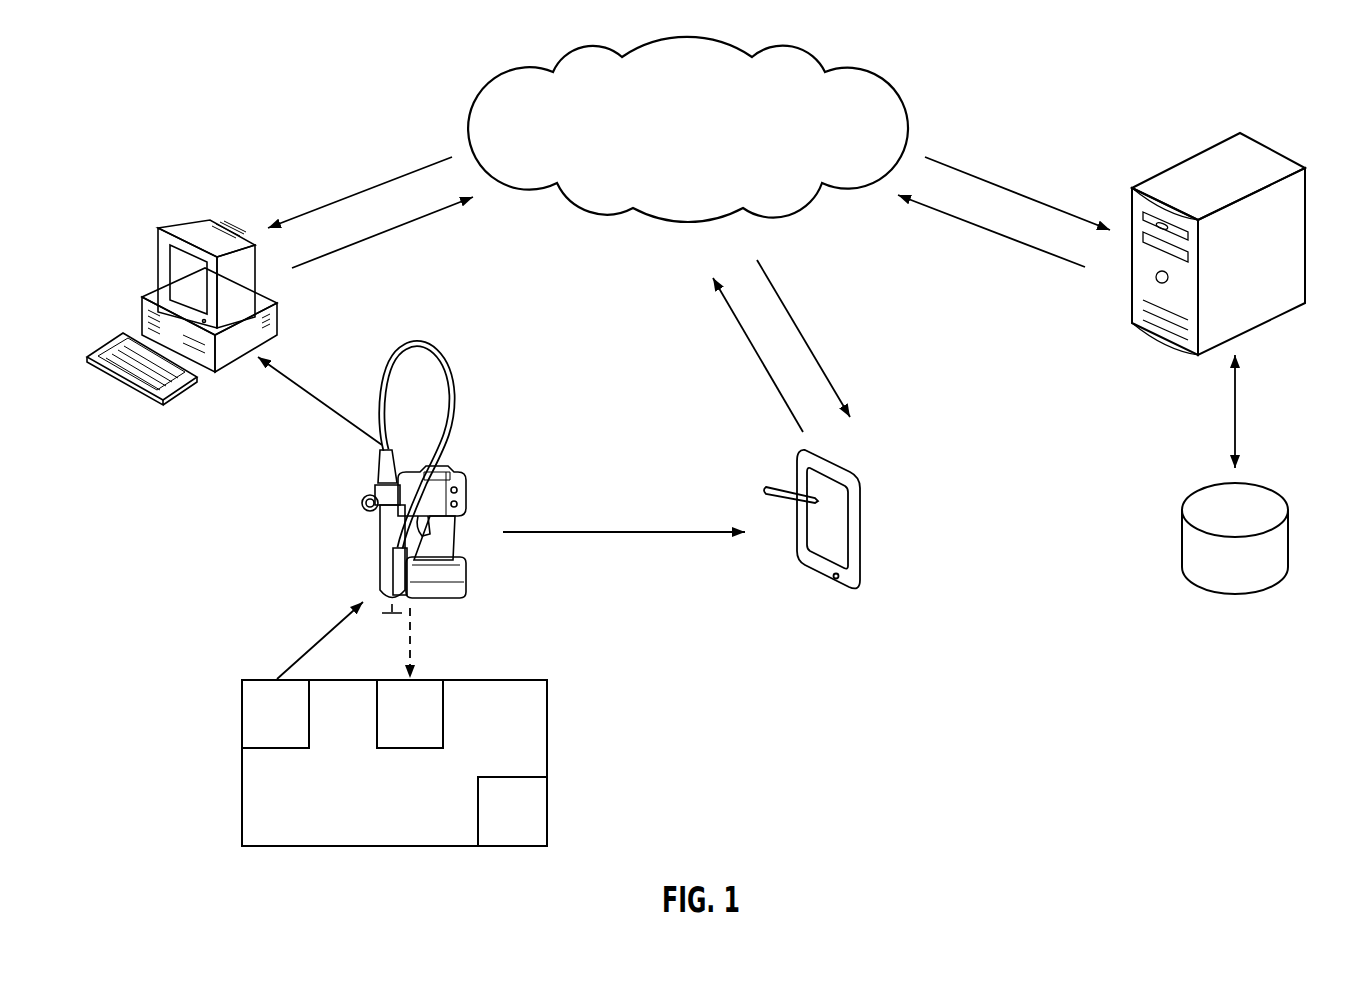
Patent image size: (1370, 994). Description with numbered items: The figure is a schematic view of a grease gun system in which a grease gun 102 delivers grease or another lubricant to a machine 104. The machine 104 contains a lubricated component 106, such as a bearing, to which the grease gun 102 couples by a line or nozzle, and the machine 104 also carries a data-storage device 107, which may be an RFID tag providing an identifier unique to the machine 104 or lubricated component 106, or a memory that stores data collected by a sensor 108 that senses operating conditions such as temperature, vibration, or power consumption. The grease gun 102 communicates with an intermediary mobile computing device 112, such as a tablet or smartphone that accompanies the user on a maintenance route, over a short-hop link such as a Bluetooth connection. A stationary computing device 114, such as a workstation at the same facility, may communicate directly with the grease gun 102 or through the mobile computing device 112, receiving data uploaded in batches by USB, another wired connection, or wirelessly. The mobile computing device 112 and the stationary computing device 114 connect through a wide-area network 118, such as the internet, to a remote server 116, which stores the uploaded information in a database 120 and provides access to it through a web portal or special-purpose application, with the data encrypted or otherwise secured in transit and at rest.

The grease gun 102 is at (466, 498).
The machine 104 is at (413, 745).
The lubricated component 106 is at (432, 727).
The data-storage device 107 is at (297, 727).
The sensor 108 is at (533, 825).
The mobile computing device 112 is at (852, 477).
The stationary computing device 114 is at (168, 223).
The remote server 116 is at (1273, 148).
The wide-area network 118 is at (710, 142).
The database 120 is at (1256, 522).